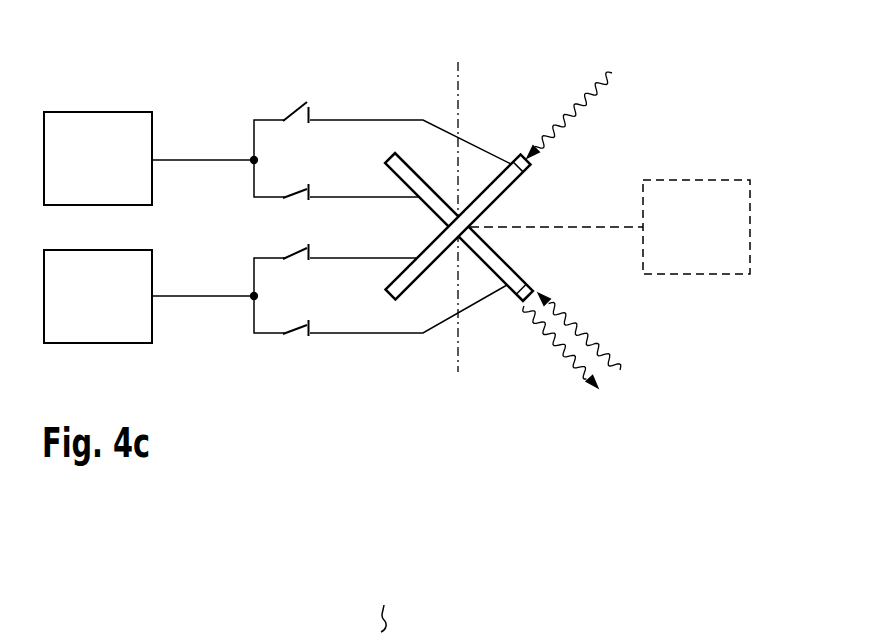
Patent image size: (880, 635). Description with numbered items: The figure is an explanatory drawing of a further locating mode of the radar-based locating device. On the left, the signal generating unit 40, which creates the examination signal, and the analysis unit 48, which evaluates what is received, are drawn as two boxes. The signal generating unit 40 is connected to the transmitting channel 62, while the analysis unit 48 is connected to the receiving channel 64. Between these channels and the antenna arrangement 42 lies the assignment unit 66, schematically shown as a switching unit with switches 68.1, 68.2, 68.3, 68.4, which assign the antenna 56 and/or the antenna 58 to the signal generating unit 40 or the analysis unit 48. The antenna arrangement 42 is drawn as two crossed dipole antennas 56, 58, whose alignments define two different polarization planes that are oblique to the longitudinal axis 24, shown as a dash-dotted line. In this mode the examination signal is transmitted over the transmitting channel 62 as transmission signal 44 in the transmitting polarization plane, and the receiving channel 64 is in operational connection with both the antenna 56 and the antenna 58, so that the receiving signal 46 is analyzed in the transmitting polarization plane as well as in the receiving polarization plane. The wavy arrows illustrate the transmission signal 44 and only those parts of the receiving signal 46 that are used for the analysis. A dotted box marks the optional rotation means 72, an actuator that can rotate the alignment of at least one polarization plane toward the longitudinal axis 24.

The longitudinal axis 24 is at (470, 72).
The signal generating unit 40 is at (112, 172).
The antenna arrangement 42 is at (530, 207).
The transmission signal 44 is at (565, 352).
The receiving signal 46 is at (580, 103).
The analysis unit 48 is at (112, 312).
The antenna 56 is at (514, 281).
The antenna 58 is at (515, 166).
The transmitting channel 62 is at (245, 108).
The receiving channel 64 is at (317, 372).
The assignment unit 66 is at (345, 223).
The switch 68.1 is at (294, 101).
The switch 68.2 is at (296, 190).
The switch 68.3 is at (295, 251).
The switch 68.4 is at (295, 327).
The rotation means 72 is at (728, 220).